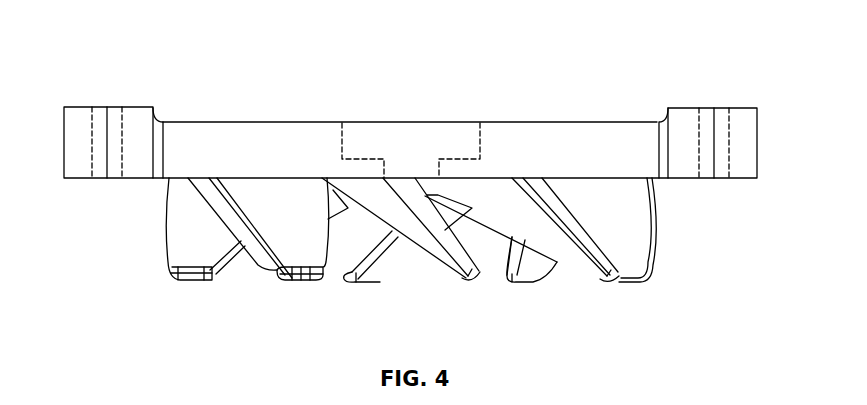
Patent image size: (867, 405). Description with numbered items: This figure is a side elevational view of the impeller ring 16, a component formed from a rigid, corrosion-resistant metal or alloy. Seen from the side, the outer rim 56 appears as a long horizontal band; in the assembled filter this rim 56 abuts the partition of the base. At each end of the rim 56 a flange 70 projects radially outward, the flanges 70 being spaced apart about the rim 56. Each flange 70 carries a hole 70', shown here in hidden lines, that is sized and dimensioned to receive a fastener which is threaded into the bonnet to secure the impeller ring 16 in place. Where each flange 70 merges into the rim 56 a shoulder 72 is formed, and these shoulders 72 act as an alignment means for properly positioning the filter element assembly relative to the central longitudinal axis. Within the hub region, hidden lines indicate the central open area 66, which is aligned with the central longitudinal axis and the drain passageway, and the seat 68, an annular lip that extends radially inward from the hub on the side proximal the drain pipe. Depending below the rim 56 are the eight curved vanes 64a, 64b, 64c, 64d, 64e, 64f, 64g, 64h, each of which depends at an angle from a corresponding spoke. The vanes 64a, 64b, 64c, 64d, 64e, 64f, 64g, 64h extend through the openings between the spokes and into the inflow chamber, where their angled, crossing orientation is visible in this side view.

The impeller ring 16 is at (112, 43).
The outer rim 56 is at (563, 132).
The flange 70 is at (412, 142).
The hole 70' is at (414, 121).
The shoulder 72 is at (137, 117).
The central open area 66 is at (407, 140).
The seat 68 is at (439, 170).
The curved vane 64a is at (240, 267).
The curved vane 64b is at (375, 272).
The curved vane 64c is at (533, 272).
The curved vane 64d is at (650, 238).
The curved vane 64e is at (595, 275).
The curved vane 64f is at (457, 275).
The curved vane 64g is at (302, 260).
The curved vane 64h is at (192, 263).